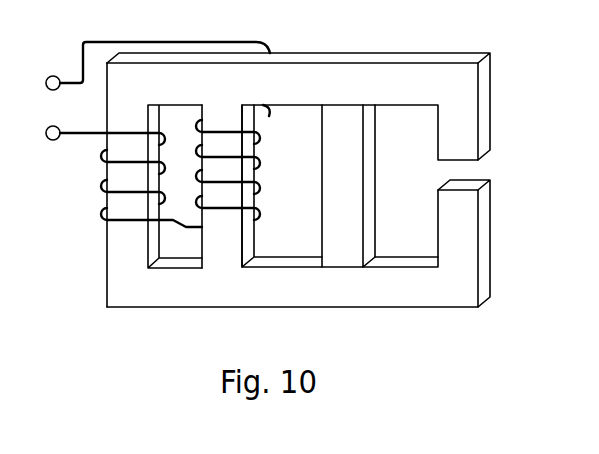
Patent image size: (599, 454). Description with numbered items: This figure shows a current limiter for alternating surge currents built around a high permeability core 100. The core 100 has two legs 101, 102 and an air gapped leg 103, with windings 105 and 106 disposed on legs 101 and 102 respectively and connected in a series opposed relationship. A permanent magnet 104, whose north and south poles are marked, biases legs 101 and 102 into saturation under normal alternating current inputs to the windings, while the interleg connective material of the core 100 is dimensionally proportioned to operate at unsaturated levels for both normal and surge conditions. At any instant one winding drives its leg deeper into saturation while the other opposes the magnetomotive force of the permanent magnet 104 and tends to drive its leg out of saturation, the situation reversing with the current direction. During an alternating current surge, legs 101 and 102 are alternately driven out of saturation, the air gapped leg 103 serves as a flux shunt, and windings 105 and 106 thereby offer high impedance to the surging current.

The high permeability core 100 is at (303, 52).
The leg 101 is at (130, 247).
The leg 102 is at (225, 262).
The air gapped leg 103 is at (462, 257).
The permanent magnet 104 is at (345, 253).
The winding 105 is at (103, 216).
The winding 106 is at (261, 158).